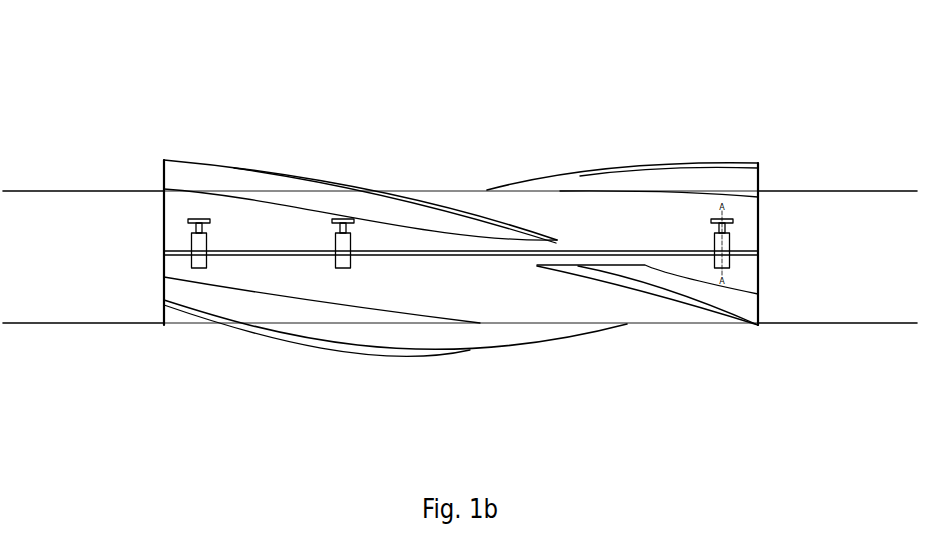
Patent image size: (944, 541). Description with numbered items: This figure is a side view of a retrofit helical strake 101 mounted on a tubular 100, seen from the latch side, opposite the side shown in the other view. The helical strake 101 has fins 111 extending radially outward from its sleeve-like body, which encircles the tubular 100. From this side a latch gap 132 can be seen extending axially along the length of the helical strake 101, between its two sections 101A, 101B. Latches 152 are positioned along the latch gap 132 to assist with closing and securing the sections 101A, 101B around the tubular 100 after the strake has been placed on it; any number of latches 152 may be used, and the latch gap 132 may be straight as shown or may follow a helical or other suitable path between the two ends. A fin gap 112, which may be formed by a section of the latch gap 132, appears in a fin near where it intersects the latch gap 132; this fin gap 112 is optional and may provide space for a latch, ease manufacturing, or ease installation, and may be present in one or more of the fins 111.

The tubular 100 is at (121, 187).
The helical strake 101 is at (166, 339).
The section of helical strake 101A is at (466, 182).
The section of helical strake 101B is at (489, 328).
The fins 111 is at (475, 251).
The fin gap 112 is at (512, 243).
The latch gap 132 is at (582, 251).
The latches 152 is at (337, 270).